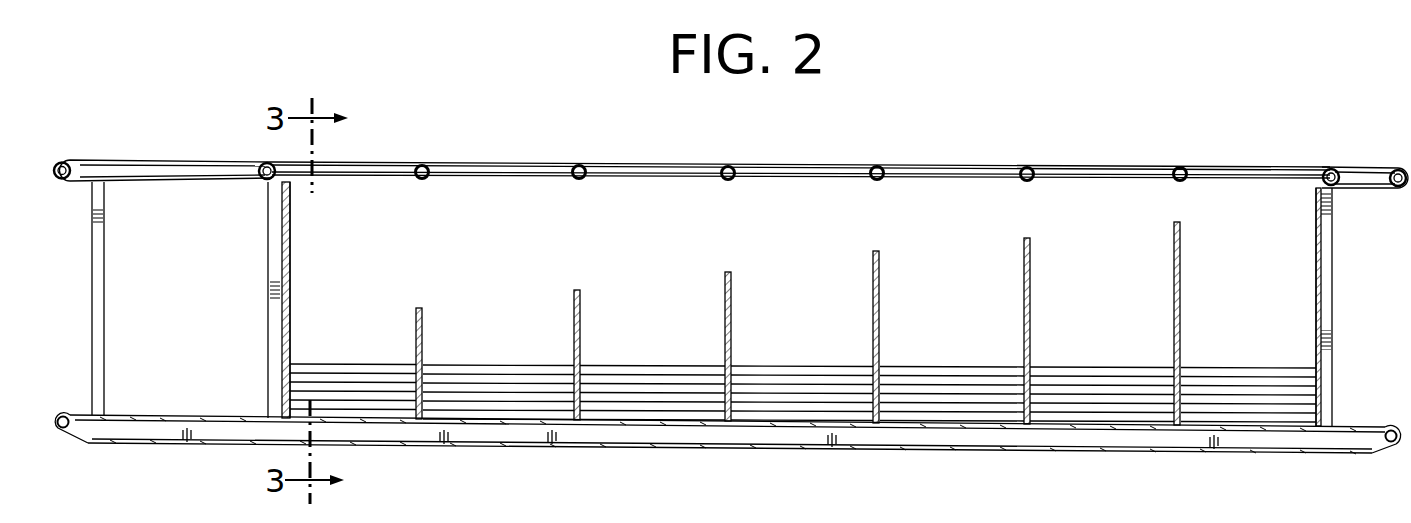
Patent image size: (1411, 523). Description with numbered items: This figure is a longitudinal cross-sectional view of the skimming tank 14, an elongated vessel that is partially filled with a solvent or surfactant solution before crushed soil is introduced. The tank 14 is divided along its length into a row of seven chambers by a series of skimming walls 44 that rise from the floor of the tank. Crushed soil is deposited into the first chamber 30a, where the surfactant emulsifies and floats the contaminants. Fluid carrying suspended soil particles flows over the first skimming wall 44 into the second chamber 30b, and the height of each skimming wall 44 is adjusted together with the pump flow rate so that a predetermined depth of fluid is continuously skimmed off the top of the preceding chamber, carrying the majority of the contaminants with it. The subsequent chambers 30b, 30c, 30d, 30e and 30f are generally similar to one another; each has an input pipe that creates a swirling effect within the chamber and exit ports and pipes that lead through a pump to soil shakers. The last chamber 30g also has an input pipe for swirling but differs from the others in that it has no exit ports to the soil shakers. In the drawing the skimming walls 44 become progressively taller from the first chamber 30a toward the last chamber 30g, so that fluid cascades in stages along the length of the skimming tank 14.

The skimming tank 14 is at (1257, 172).
The skimming wall 44 is at (416, 325).
The first chamber 30a is at (1283, 357).
The second chamber 30b is at (1122, 354).
The chamber 30c is at (970, 354).
The chamber 30d is at (828, 353).
The chamber 30e is at (682, 353).
The chamber 30f is at (520, 353).
The last chamber 30g is at (382, 353).